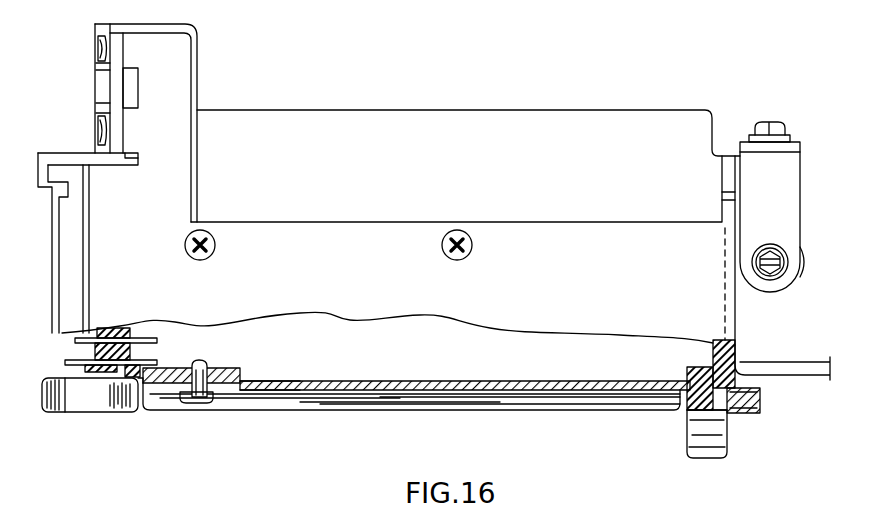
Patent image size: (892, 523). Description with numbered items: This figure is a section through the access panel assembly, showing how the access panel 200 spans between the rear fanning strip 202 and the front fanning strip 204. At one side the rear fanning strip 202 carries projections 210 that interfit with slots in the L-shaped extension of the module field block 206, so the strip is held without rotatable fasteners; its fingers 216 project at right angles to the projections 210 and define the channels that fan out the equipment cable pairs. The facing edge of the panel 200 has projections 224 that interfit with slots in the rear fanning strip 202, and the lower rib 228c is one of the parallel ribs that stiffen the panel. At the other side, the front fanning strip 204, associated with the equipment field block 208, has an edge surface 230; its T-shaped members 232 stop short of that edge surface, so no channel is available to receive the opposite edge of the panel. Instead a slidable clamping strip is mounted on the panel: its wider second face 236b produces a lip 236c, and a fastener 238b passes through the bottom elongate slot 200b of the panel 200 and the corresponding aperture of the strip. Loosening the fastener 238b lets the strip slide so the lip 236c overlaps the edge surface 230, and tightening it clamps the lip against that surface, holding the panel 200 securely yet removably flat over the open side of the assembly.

The access panel 200 is at (458, 417).
The bottom elongate slot 200b is at (247, 382).
The rear fanning strip 202 is at (682, 453).
The front fanning strip 204 is at (78, 401).
The module field block 206 is at (763, 408).
The equipment field block 208 is at (119, 416).
The projection 210 is at (745, 402).
The finger 216 is at (717, 438).
The projection 224 is at (688, 378).
The lower rib 228c is at (325, 405).
The edge surface 230 is at (148, 410).
The T-shaped member 232 is at (72, 388).
The second face 236b is at (222, 364).
The lip 236c is at (150, 373).
The fastener 238b is at (200, 404).